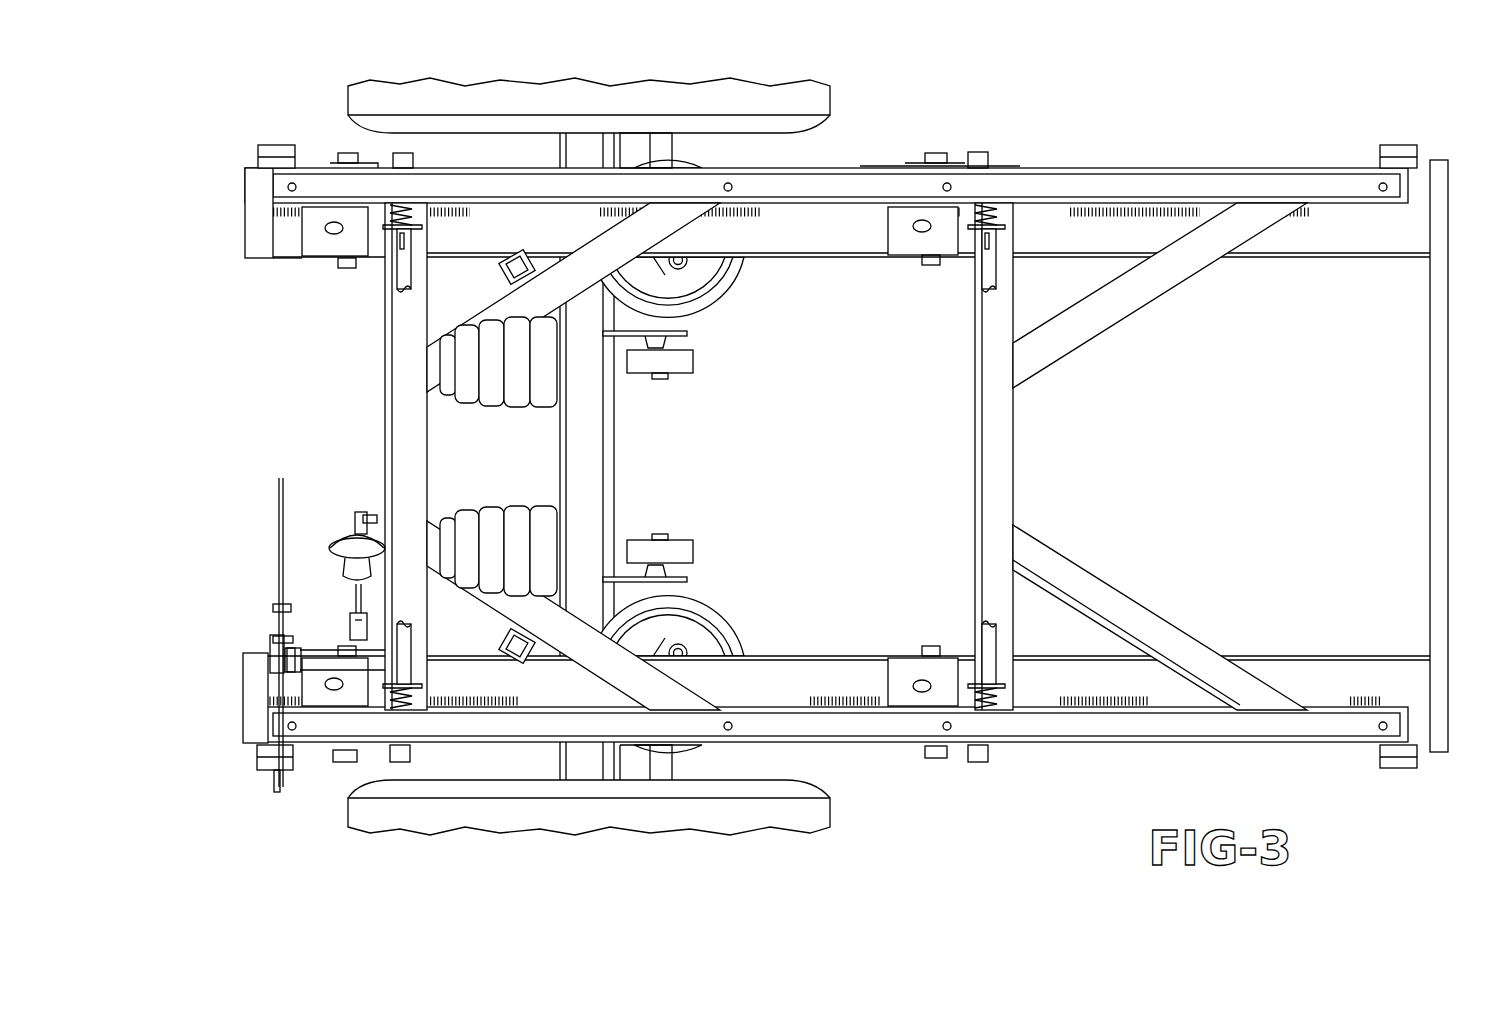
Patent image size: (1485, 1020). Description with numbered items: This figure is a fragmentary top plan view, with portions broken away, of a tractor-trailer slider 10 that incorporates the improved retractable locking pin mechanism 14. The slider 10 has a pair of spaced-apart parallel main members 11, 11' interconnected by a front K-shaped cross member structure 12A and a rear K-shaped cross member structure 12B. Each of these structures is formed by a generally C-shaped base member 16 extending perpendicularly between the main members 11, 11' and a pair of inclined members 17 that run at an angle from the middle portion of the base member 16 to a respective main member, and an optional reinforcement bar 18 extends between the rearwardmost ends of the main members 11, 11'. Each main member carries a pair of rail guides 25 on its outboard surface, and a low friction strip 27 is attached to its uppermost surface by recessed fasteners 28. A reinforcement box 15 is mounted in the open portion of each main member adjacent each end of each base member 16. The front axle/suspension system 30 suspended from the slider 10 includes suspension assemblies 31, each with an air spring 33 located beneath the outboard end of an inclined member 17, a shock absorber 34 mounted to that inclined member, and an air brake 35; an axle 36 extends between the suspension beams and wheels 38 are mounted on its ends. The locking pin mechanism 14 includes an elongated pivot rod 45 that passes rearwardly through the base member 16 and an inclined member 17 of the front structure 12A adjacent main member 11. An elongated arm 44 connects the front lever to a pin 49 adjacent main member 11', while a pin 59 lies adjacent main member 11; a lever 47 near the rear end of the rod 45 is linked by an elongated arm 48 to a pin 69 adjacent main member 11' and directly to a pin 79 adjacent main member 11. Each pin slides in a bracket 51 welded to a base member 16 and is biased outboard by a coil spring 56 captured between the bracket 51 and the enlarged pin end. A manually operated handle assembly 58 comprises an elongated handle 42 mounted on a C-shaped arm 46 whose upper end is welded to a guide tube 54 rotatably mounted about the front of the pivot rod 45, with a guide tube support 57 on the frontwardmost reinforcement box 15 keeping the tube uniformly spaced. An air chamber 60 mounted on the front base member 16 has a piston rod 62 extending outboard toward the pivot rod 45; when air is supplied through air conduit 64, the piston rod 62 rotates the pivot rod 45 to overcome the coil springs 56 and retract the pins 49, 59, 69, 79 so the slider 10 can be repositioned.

The slider 10 is at (1122, 160).
The main member 11 is at (762, 455).
The main member 11' is at (215, 146).
The front K-shaped cross member structure 12A is at (398, 392).
The rear K-shaped cross member structure 12B is at (1168, 620).
The retractable locking pin mechanism 14 is at (320, 640).
The reinforcement box 15 is at (310, 230).
The base member 16 is at (404, 318).
The inclined member 17 is at (660, 222).
The reinforcement bar 18 is at (1435, 346).
The rail guide 25 is at (282, 145).
The low friction strip 27 is at (1255, 183).
The recessed fastener 28 is at (944, 185).
The front axle/suspension system 30 is at (630, 496).
The suspension assembly 31 is at (702, 310).
The air spring 33 is at (706, 284).
The shock absorber 34 is at (528, 262).
The air brake 35 is at (526, 402).
The axle 36 is at (616, 411).
The wheel 38 is at (790, 95).
The handle 42 is at (277, 792).
The elongated arm 44 is at (395, 276).
The pivot rod 45 is at (838, 655).
The C-shaped arm 46 is at (285, 604).
The lever 47 is at (975, 652).
The elongated arm 48 is at (978, 265).
The pin 49 is at (404, 153).
The bracket 51 is at (416, 242).
The guide tube 54 is at (318, 700).
The coil spring 56 is at (406, 212).
The guide tube support 57 is at (278, 617).
The handle assembly 58 is at (278, 598).
The pin 59 is at (400, 763).
The air chamber 60 is at (340, 530).
The piston rod 62 is at (370, 600).
The air conduit 64 is at (372, 512).
The pin 69 is at (978, 152).
The pin 79 is at (978, 763).